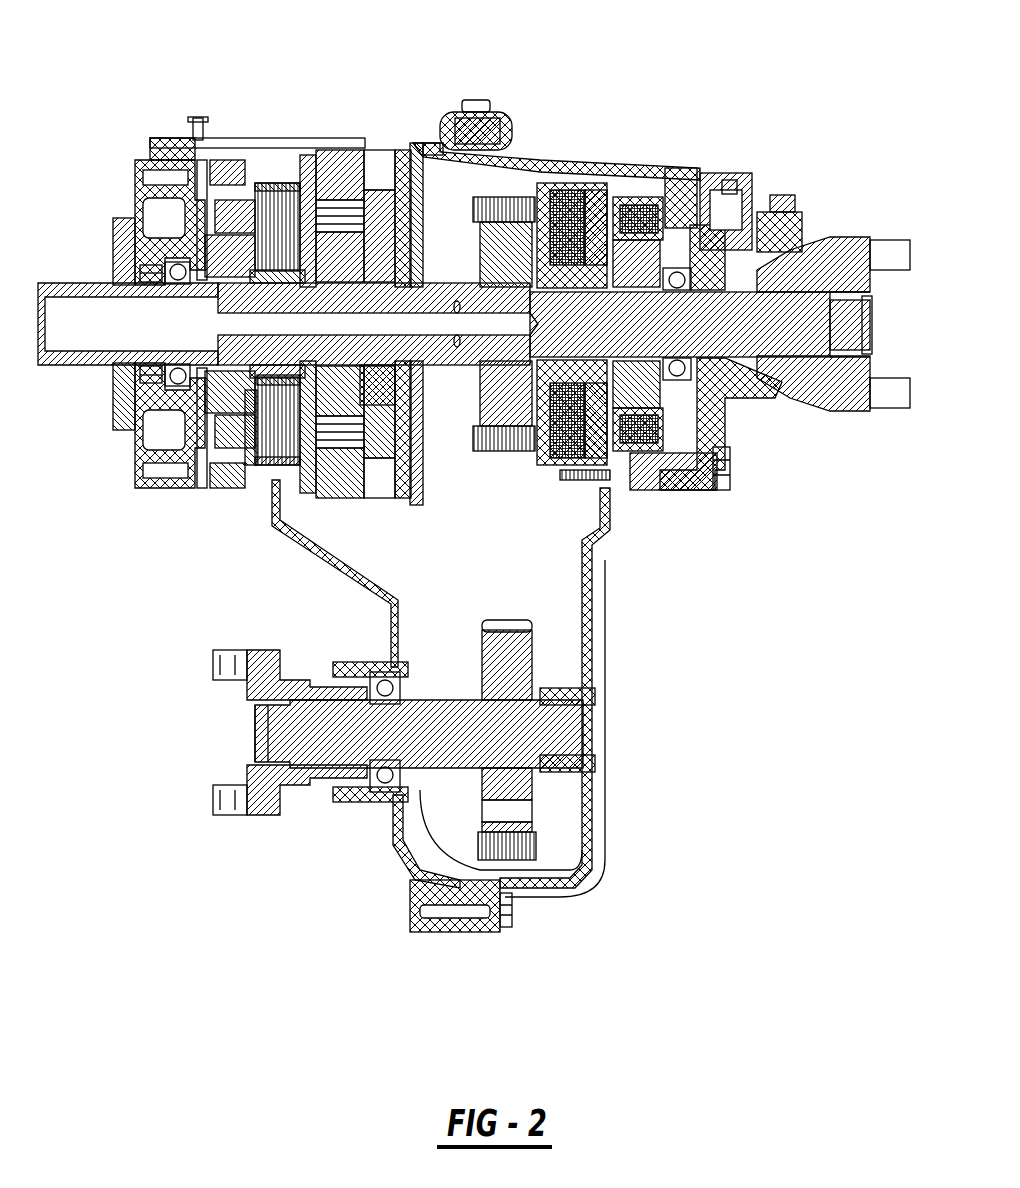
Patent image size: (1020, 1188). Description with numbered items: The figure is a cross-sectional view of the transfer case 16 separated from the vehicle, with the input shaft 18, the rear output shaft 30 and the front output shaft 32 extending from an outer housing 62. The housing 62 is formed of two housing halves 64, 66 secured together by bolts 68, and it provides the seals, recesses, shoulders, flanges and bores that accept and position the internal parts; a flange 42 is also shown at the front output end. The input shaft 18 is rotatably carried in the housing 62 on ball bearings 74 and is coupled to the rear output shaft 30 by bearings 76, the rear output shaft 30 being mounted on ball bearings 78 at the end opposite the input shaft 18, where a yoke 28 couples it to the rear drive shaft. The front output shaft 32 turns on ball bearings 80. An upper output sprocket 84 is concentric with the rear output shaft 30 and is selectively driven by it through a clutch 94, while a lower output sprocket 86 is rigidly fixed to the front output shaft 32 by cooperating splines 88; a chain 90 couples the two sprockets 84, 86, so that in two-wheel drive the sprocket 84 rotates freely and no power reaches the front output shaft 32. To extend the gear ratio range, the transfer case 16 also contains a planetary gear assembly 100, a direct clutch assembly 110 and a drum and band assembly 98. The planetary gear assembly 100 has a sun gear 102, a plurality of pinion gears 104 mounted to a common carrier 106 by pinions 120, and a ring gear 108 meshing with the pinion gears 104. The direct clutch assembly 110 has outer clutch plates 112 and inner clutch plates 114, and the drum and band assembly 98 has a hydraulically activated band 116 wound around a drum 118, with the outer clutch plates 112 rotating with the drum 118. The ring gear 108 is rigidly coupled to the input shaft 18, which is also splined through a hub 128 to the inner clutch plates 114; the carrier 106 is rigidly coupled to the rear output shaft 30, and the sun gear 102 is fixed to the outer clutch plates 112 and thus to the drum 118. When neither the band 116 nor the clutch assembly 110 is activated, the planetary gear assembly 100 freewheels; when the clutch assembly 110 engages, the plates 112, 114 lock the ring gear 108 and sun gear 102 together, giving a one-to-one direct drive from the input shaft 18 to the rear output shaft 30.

The transfer case 16 is at (740, 70).
The input shaft 18 is at (80, 285).
The yoke 28 is at (840, 267).
The rear output shaft 30 is at (783, 318).
The front output shaft 32 is at (340, 730).
The flange 42 is at (263, 813).
The outer housing 62 is at (595, 592).
The housing half 64 is at (400, 137).
The housing half 66 is at (662, 173).
The bolts 68 is at (482, 122).
The ball bearings 74 is at (173, 377).
The bearings 76 is at (385, 365).
The ball bearings 78 is at (690, 280).
The ball bearings 80 is at (388, 688).
The upper output sprocket 84 is at (507, 200).
The lower output sprocket 86 is at (517, 655).
The cooperating splines 88 is at (517, 757).
The chain 90 is at (530, 240).
The clutch 94 is at (627, 193).
The drum and band assembly 98 is at (225, 163).
The planetary gear assembly 100 is at (320, 137).
The sun gear 102 is at (235, 205).
The pinion gears 104 is at (417, 160).
The carrier 106 is at (305, 440).
The ring gear 108 is at (340, 160).
The direct clutch assembly 110 is at (270, 417).
The outer clutch plates 112 is at (210, 200).
The inner clutch plates 114 is at (263, 400).
The band 116 is at (243, 180).
The drum 118 is at (262, 435).
The pinions 120 is at (325, 170).
The hub 128 is at (278, 277).